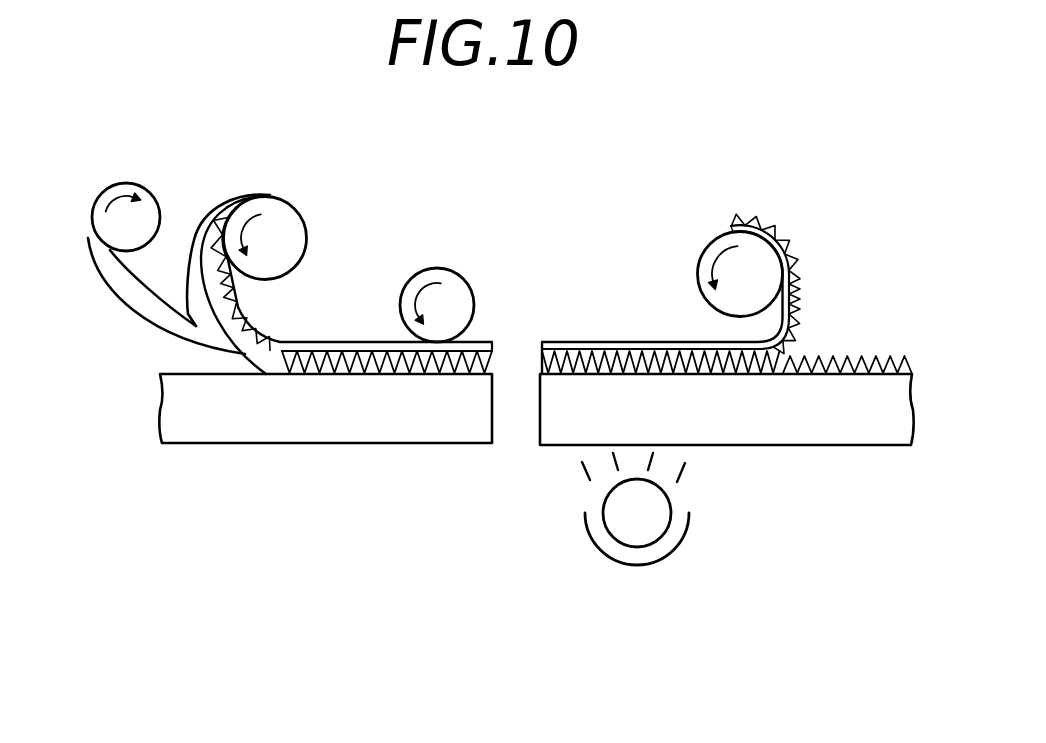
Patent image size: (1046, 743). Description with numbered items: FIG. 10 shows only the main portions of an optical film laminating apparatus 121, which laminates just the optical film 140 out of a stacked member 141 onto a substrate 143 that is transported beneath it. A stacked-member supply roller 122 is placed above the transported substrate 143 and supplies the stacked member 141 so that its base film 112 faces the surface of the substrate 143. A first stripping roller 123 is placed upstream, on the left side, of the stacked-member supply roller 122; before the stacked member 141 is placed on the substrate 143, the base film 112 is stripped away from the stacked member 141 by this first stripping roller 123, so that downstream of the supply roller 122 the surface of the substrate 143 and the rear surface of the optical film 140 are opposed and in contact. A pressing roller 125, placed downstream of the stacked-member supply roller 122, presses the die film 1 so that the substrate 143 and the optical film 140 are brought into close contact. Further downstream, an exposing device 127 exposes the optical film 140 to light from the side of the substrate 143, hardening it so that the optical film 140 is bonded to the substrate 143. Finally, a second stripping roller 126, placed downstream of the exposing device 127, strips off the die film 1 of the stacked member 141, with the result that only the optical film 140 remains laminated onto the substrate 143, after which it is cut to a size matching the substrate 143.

The die film 1 is at (598, 340).
The base film 112 is at (132, 307).
The optical film laminating apparatus 121 is at (807, 150).
The stacked-member supply roller 122 is at (278, 230).
The first stripping roller 123 is at (145, 213).
The pressing roller 125 is at (455, 297).
The second stripping roller 126 is at (730, 272).
The exposing device 127 is at (633, 530).
The optical film 140 is at (850, 360).
The stacked member 141 is at (192, 310).
The substrate 143 is at (865, 427).